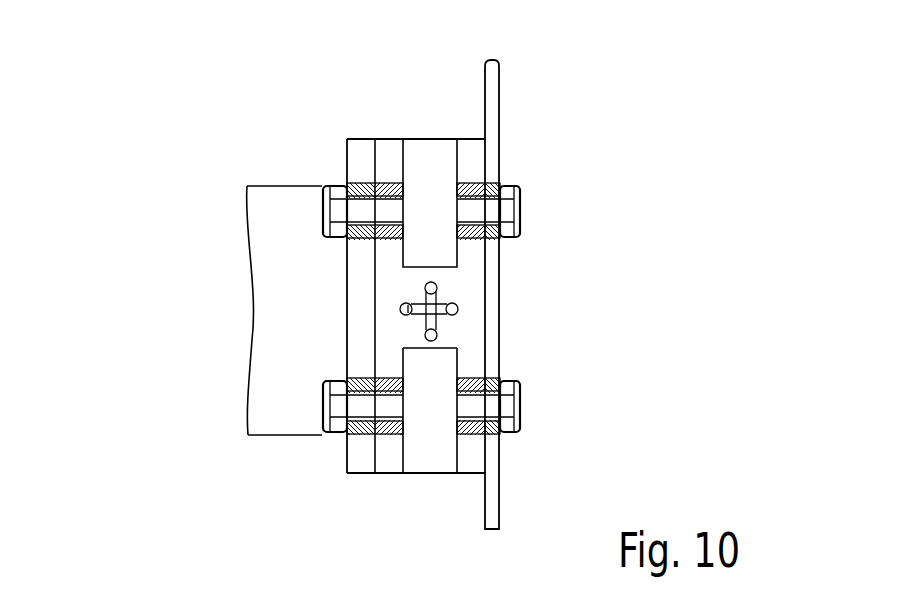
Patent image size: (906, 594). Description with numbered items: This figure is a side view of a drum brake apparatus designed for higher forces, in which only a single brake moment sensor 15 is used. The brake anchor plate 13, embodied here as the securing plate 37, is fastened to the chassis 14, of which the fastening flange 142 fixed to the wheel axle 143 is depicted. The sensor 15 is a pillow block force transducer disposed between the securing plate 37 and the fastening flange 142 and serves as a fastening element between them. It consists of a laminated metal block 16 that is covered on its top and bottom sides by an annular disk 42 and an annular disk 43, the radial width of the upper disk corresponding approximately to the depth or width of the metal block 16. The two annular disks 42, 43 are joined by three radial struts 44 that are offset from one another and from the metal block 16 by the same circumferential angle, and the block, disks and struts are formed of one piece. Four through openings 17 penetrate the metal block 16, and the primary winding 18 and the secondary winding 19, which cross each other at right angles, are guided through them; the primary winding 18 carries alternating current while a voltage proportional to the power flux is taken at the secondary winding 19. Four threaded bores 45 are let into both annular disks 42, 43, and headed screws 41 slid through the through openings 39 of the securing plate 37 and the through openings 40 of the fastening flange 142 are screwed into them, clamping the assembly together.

The brake anchor plate 13 is at (561, 273).
The chassis 14 is at (232, 401).
The brake moment sensor 15 is at (311, 297).
The metal block 16 is at (452, 327).
The through openings 17 is at (418, 305).
The primary winding 18 is at (423, 291).
The secondary winding 19 is at (411, 316).
The securing plate 37 is at (493, 289).
The through openings 39 is at (521, 186).
The through openings 40 is at (362, 199).
The headed screws 41 is at (322, 203).
The annular disk 42 is at (474, 456).
The annular disk 43 is at (389, 463).
The radial struts 44 is at (445, 151).
The threaded bores 45 is at (457, 195).
The fastening flange 142 is at (360, 335).
The wheel axle 143 is at (211, 336).